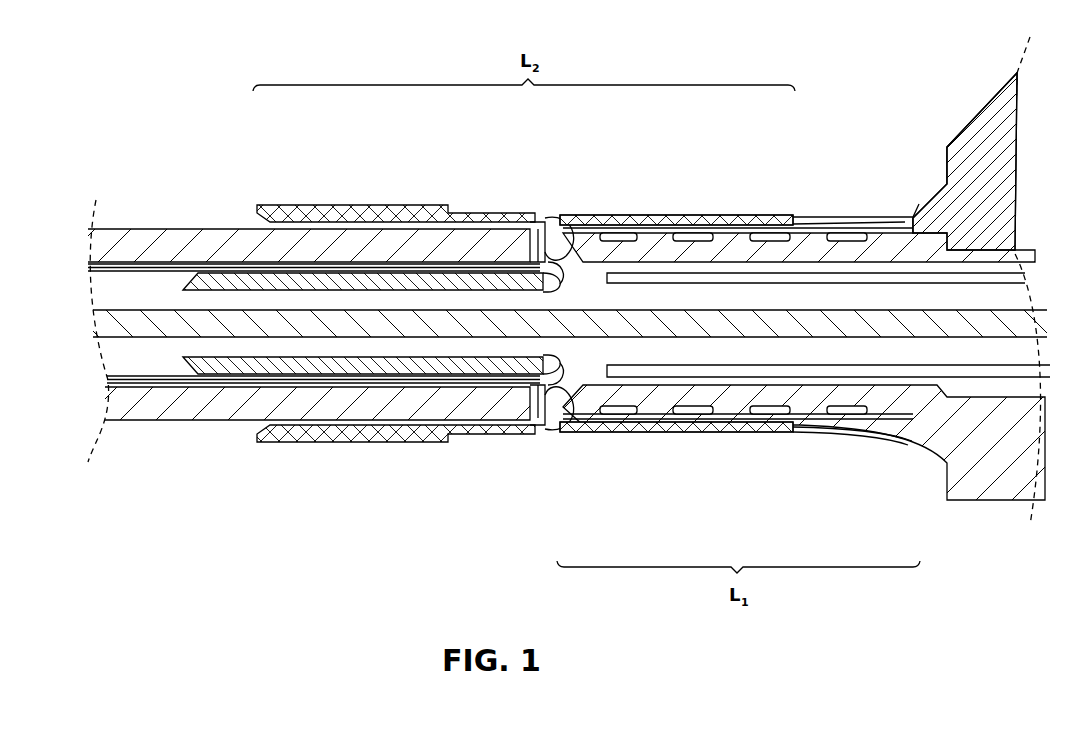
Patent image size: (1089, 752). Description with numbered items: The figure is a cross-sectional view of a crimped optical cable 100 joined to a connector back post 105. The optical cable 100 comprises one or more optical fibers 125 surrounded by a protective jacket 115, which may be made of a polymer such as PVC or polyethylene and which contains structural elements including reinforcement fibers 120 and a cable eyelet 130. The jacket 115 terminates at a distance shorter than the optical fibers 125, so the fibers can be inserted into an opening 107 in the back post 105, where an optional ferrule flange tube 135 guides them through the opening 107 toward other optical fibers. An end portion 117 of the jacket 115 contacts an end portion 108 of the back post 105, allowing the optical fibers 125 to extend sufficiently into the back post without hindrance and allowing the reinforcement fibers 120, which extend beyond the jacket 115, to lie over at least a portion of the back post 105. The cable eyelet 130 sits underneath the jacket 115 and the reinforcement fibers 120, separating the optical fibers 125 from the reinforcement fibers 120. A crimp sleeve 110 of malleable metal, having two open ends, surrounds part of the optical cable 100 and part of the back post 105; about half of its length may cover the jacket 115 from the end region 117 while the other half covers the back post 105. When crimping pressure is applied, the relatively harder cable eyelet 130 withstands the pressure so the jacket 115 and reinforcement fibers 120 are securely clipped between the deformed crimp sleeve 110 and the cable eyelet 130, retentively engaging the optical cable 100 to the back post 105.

The optical cable 100 is at (117, 428).
The back post 105 is at (807, 230).
The opening 107 is at (566, 352).
The end portion 108 is at (545, 400).
The crimp sleeve 110 is at (312, 207).
The jacket 115 is at (162, 240).
The end portion of the jacket 117 is at (562, 215).
The reinforcement fibers 120 is at (622, 220).
The optical fibers 125 is at (118, 337).
The cable eyelet 130 is at (223, 372).
The ferrule flange tube 135 is at (680, 370).